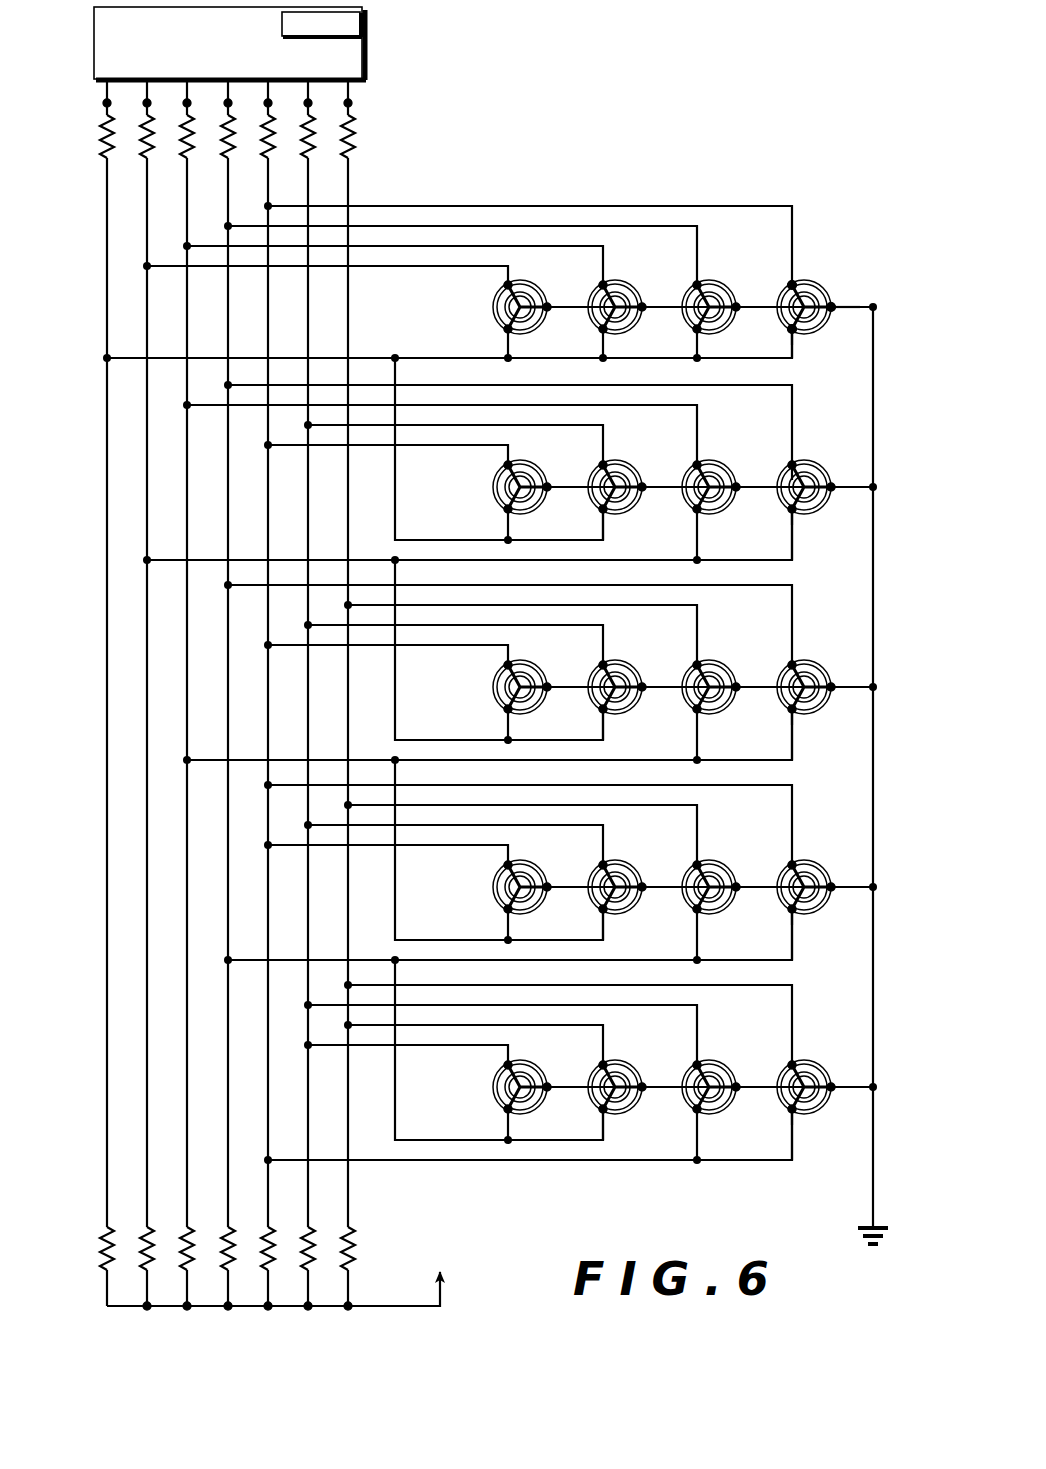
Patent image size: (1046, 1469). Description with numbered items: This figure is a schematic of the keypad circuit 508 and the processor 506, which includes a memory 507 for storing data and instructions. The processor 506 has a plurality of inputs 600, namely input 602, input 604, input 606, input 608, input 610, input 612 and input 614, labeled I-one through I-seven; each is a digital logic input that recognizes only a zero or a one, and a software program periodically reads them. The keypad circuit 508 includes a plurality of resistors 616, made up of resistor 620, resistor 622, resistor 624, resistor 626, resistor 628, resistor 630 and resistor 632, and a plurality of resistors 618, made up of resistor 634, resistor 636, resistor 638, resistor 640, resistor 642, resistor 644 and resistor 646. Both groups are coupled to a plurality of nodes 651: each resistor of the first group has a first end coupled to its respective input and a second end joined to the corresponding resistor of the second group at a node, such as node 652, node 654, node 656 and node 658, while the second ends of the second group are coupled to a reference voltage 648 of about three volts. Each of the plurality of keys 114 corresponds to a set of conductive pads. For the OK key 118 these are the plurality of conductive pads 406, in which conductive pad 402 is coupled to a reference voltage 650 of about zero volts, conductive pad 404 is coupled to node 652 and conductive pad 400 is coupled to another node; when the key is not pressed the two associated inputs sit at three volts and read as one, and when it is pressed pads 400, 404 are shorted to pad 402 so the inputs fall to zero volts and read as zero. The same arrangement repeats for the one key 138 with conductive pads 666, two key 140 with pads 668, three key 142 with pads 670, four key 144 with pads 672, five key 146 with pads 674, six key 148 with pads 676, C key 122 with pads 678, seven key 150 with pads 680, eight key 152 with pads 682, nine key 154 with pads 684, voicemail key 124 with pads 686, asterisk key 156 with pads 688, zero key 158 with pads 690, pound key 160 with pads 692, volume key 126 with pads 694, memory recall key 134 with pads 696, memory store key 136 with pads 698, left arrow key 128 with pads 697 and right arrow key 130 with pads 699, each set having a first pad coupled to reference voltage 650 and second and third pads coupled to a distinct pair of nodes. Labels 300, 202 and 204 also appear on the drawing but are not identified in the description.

The plurality of inputs 600 is at (482, 100).
The processor 506 is at (363, 45).
The memory 507 is at (363, 22).
The keypad circuit 508 is at (650, 188).
The input 602 is at (106, 102).
The input 604 is at (145, 106).
The input 606 is at (185, 106).
The input 608 is at (230, 92).
The input 610 is at (312, 98).
The input 612 is at (270, 94).
The input 614 is at (350, 90).
The plurality of resistors 616 is at (464, 140).
The plurality of resistors 618 is at (372, 1222).
The resistor 620 is at (107, 160).
The resistor 622 is at (147, 160).
The resistor 624 is at (187, 160).
The resistor 626 is at (230, 160).
The resistor 628 is at (270, 145).
The resistor 630 is at (312, 130).
The resistor 632 is at (355, 130).
The resistor 634 is at (107, 1245).
The resistor 636 is at (147, 1270).
The resistor 638 is at (187, 1270).
The resistor 640 is at (228, 1270).
The resistor 642 is at (268, 1270).
The resistor 644 is at (310, 1230).
The resistor 646 is at (348, 1270).
The reference voltage 648 is at (443, 1300).
The reference voltage 650 is at (872, 1183).
The plurality of nodes 651 is at (100, 340).
The node 652 is at (107, 455).
The node 654 is at (147, 525).
The node 656 is at (187, 583).
The node 658 is at (228, 635).
The plurality of conductive pads 666 is at (521, 305).
The plurality of conductive pads 668 is at (616, 305).
The plurality of conductive pads 670 is at (710, 305).
The plurality of conductive pads 672 is at (521, 485).
The plurality of conductive pads 674 is at (616, 485).
The plurality of conductive pads 676 is at (710, 485).
The plurality of conductive pads 678 is at (806, 492).
The plurality of conductive pads 680 is at (521, 685).
The plurality of conductive pads 682 is at (616, 685).
The plurality of conductive pads 684 is at (710, 685).
The plurality of conductive pads 686 is at (805, 685).
The plurality of conductive pads 688 is at (521, 885).
The plurality of conductive pads 690 is at (616, 885).
The plurality of conductive pads 692 is at (710, 885).
The plurality of conductive pads 694 is at (805, 885).
The plurality of conductive pads 696 is at (521, 1085).
The plurality of conductive pads 697 is at (710, 1085).
The plurality of conductive pads 698 is at (616, 1085).
The plurality of conductive pads 699 is at (805, 1085).
The sensor 300 is at (822, 300).
The conductive pad 400 is at (795, 284).
The conductive pad 402 is at (830, 306).
The conductive pad 404 is at (794, 334).
The plurality of keys 114 is at (826, 230).
The sensor position 202 is at (858, 242).
The common line 204 is at (833, 358).
The plurality of conductive pads 406 is at (823, 395).
The OK key 118 is at (790, 331).
The C key 122 is at (790, 511).
The voicemail key 124 is at (790, 711).
The volume key 126 is at (790, 911).
The left arrow key 128 is at (695, 1111).
The right arrow key 130 is at (790, 1111).
The memory recall key 134 is at (506, 1110).
The memory store key 136 is at (601, 1111).
The one key 138 is at (506, 330).
The two key 140 is at (601, 331).
The three key 142 is at (695, 331).
The four key 144 is at (506, 510).
The five key 146 is at (601, 511).
The six key 148 is at (695, 511).
The seven key 150 is at (506, 710).
The eight key 152 is at (601, 711).
The nine key 154 is at (695, 711).
The asterisk key 156 is at (506, 910).
The zero key 158 is at (601, 911).
The pound key 160 is at (695, 911).